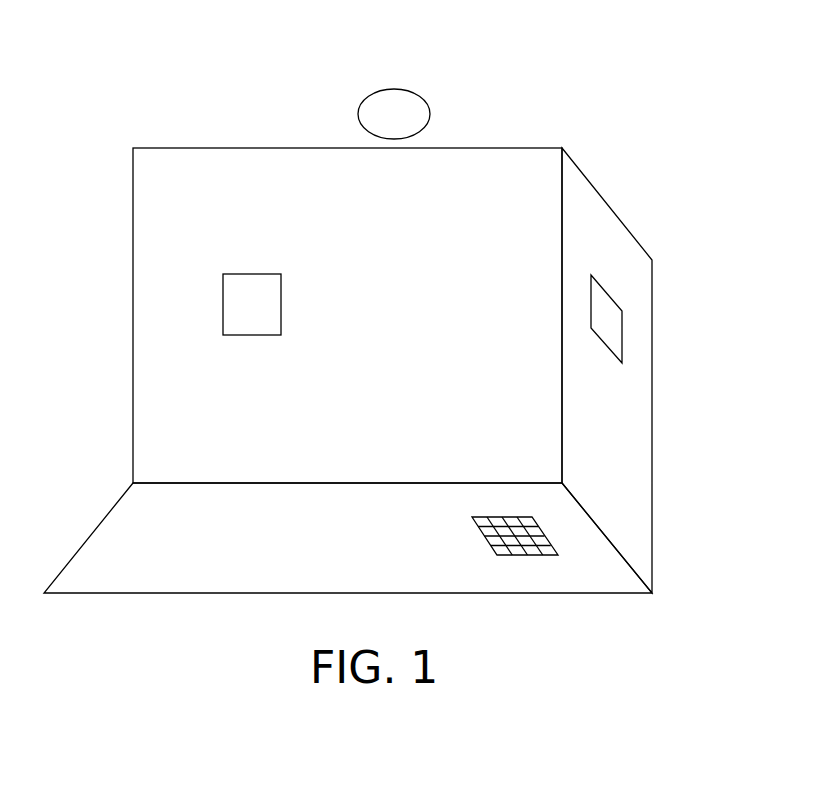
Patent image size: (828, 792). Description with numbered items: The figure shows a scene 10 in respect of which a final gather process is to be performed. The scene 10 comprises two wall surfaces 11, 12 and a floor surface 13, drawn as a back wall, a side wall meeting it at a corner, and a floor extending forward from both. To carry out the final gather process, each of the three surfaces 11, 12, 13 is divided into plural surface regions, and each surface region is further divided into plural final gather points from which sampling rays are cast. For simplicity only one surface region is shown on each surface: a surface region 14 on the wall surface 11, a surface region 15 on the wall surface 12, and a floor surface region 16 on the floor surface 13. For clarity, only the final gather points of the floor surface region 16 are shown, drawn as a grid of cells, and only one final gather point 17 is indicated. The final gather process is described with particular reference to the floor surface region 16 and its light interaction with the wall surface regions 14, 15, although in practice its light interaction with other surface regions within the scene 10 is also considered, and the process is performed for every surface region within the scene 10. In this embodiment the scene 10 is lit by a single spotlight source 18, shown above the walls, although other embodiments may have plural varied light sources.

The scene 10 is at (558, 110).
The wall surface 11 is at (213, 158).
The wall surface 12 is at (651, 429).
The floor surface 13 is at (157, 593).
The surface region 14 is at (296, 285).
The surface region 15 is at (635, 324).
The floor surface region 16 is at (508, 574).
The final gather point 17 is at (502, 553).
The spotlight source 18 is at (372, 93).